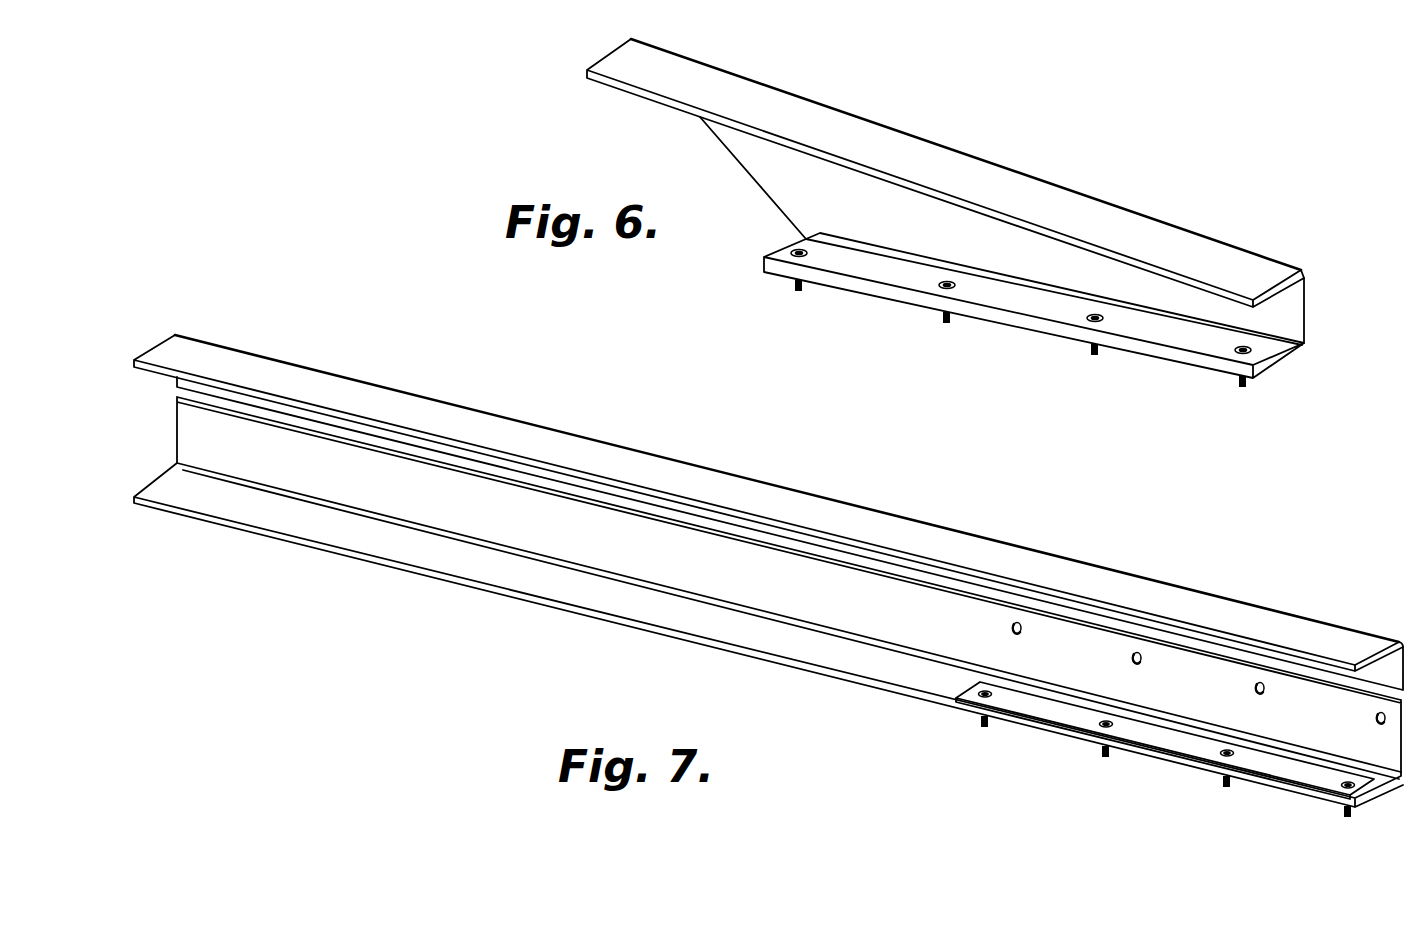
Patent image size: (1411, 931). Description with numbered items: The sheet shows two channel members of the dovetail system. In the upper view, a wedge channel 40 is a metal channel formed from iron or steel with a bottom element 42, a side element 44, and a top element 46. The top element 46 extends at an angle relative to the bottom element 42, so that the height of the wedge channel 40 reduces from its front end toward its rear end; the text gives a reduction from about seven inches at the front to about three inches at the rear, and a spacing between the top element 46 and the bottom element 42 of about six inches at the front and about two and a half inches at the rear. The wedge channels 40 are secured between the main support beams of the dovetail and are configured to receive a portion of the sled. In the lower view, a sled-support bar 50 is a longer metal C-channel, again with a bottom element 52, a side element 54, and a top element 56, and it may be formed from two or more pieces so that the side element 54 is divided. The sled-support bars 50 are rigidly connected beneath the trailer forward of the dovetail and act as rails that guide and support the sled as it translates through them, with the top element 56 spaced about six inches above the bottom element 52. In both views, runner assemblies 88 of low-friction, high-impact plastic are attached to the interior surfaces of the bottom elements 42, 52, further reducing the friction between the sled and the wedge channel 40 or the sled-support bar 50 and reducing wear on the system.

In FIG. 6, the wedge channel 40 is at (1132, 150).
In FIG. 6, the top element 46 is at (627, 65).
In FIG. 6, the side element 44 is at (793, 173).
In FIG. 6, the bottom element 42 is at (1278, 358).
In FIG. 6, the runner assembly 88 is at (1013, 300).
In FIG. 7, the runner assembly 88 is at (1193, 745).
In FIG. 7, the sled-support bar 50 is at (325, 355).
In FIG. 7, the top element 56 is at (627, 467).
In FIG. 7, the side element 54 is at (1311, 710).
In FIG. 7, the bottom element 52 is at (1380, 783).